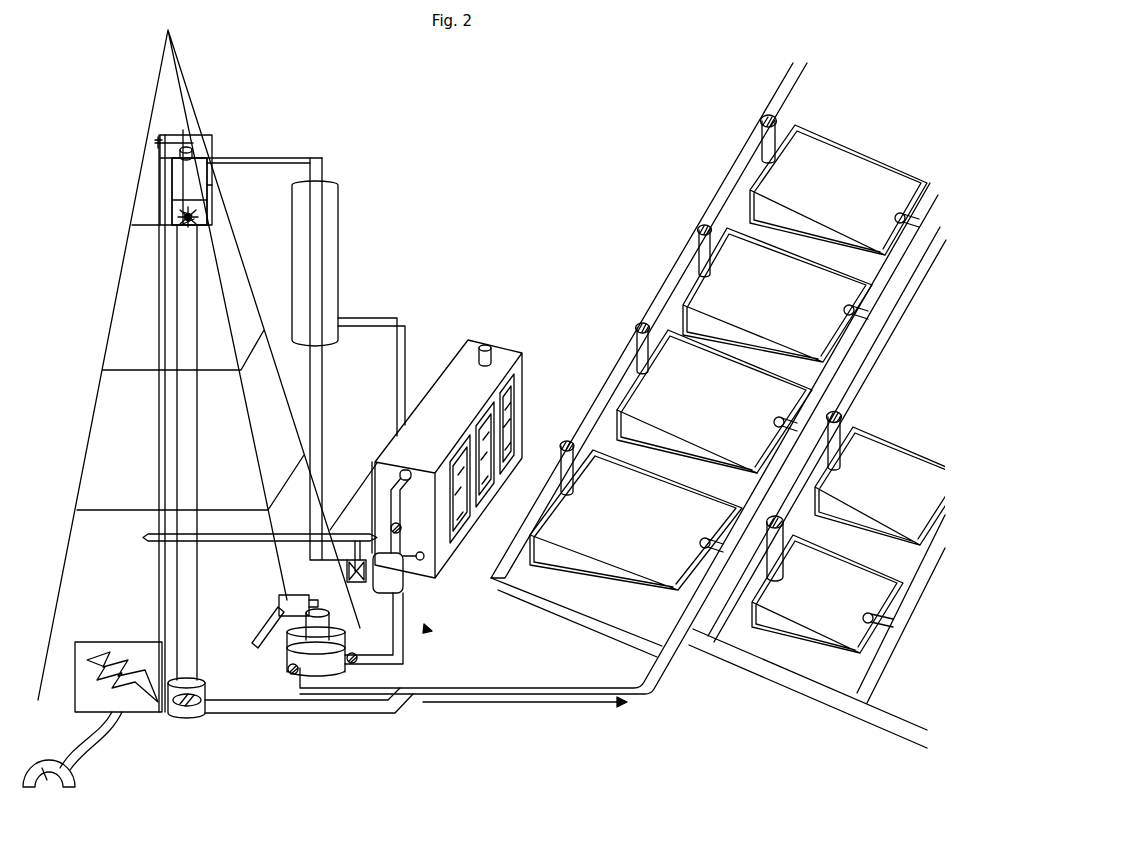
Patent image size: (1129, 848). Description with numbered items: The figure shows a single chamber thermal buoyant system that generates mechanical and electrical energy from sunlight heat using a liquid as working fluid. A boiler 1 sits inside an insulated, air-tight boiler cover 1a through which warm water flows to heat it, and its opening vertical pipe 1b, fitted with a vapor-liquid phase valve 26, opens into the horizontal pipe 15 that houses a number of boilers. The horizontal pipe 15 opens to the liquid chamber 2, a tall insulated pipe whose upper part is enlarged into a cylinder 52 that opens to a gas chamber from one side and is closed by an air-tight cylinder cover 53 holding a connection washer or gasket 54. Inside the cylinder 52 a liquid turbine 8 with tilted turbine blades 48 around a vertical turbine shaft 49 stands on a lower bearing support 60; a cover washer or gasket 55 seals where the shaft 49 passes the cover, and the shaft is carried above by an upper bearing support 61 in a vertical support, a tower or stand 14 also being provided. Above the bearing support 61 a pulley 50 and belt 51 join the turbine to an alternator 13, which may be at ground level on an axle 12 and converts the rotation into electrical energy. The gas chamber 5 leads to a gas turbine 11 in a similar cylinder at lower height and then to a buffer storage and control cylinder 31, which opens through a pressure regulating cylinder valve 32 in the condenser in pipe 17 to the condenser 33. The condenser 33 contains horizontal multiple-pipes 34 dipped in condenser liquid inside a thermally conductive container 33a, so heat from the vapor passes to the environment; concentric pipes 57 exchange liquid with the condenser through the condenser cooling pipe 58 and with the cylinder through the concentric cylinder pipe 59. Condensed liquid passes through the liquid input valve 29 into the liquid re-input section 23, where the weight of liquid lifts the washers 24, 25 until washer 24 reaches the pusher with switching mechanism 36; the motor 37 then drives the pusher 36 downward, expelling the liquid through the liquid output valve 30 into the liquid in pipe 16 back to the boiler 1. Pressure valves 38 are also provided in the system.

The boiler 1 is at (607, 457).
The boiler cover 1a is at (637, 405).
The vertical pipe 1b is at (660, 438).
The liquid chamber 2 is at (178, 342).
The gas chamber 5 is at (165, 330).
The liquid turbine 8 is at (200, 190).
The gas turbine 11 is at (365, 553).
The axle 12 is at (310, 385).
The alternator 13 is at (129, 713).
The tower or stand 14 is at (136, 187).
The horizontal pipe 15 is at (384, 712).
The liquid in pipe 16 is at (605, 704).
The condenser in pipe 17 is at (405, 472).
The liquid re-input section 23 is at (330, 668).
The washer 24 is at (330, 517).
The washer 25 is at (318, 672).
The vapor-liquid phase valve 26 is at (707, 235).
The liquid input valve 29 is at (354, 663).
The liquid output valve 30 is at (318, 642).
The cylinder 31 is at (404, 700).
The cylinder valve 32 is at (415, 567).
The condenser 33 is at (468, 342).
The container 33a is at (493, 352).
The multiple-pipes 34 is at (521, 447).
The pusher with switching mechanism 36 is at (291, 662).
The motor 37 is at (283, 620).
The pressure valve 38 is at (181, 713).
The turbine blades 48 is at (190, 214).
The turbine shaft 49 is at (204, 156).
The pulley 50 is at (188, 136).
The belt 51 is at (160, 536).
The cylinder 52 is at (175, 182).
The cylinder cover 53 is at (183, 130).
The connection washer or gasket 54 is at (200, 150).
The cover washer or gasket 55 is at (176, 135).
The concentric pipes 57 is at (338, 207).
The condenser cooling pipe 58 is at (398, 320).
The concentric cylinder pipe 59 is at (430, 632).
The lower bearing support 60 is at (196, 220).
The upper bearing support 61 is at (196, 145).